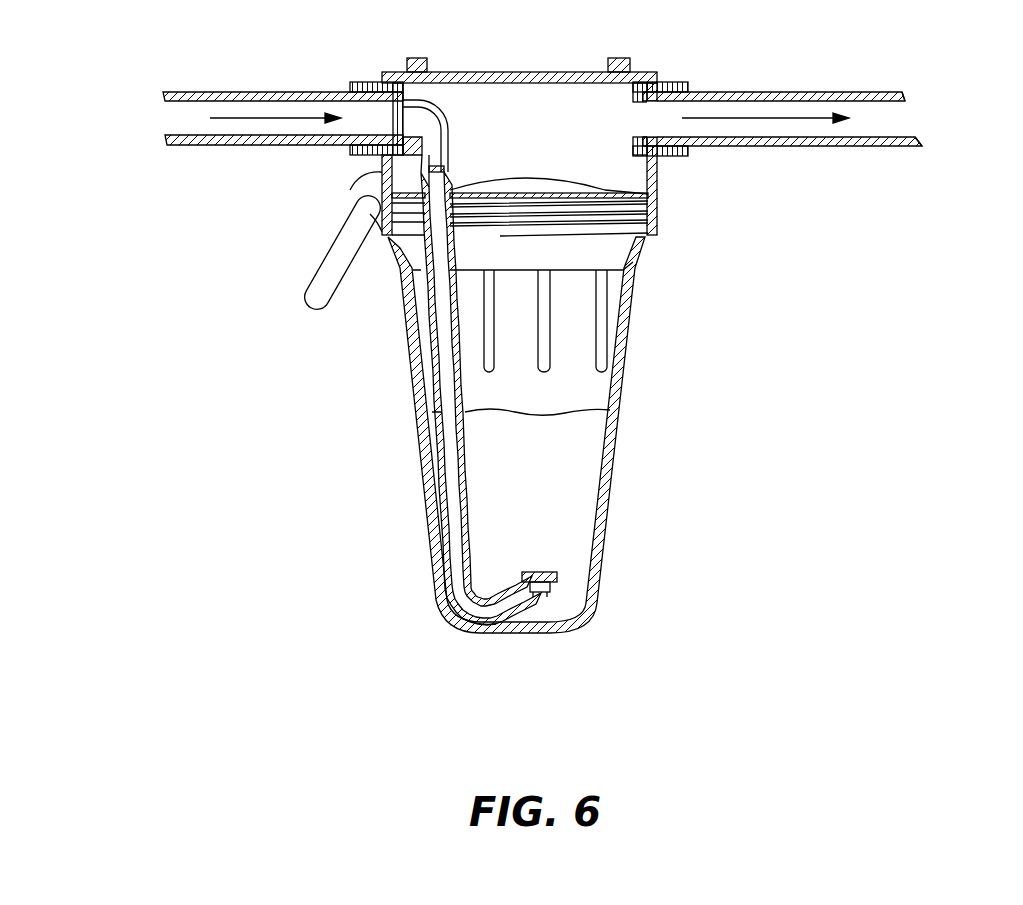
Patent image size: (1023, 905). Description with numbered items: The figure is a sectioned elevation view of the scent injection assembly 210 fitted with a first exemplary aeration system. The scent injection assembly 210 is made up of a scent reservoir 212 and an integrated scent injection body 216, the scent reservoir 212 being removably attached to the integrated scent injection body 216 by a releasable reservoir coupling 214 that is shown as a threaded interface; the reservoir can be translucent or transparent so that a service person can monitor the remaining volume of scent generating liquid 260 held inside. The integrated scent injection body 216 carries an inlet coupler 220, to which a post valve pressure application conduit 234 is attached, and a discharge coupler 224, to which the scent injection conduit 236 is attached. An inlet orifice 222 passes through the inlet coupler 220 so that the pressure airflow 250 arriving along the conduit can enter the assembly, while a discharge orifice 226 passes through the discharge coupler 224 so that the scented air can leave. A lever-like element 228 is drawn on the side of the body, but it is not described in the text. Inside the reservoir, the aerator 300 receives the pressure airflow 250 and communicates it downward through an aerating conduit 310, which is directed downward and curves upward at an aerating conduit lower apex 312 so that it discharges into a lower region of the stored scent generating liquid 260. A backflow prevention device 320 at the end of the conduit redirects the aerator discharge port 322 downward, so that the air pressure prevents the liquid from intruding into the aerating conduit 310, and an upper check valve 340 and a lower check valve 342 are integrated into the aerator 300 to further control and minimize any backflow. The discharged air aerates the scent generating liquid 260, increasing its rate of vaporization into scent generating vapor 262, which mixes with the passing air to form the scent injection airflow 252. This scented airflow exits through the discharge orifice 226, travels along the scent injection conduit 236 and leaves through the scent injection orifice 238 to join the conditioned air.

The scent injection assembly 210 is at (500, 369).
The scent reservoir 212 is at (432, 518).
The releasable reservoir coupling 214 is at (658, 231).
The integrated scent injection body 216 is at (660, 180).
The inlet coupler 220 is at (370, 83).
The inlet orifice 222 is at (412, 120).
The discharge coupler 224 is at (675, 82).
The discharge orifice 226 is at (626, 120).
The lever 228 is at (330, 255).
The post valve pressure application conduit 234 is at (277, 92).
The scent injection conduit 236 is at (775, 92).
The scent injection orifice 238 is at (924, 117).
The pressure airflow 250 is at (262, 137).
The scent injection airflow 252 is at (787, 122).
The scent generating liquid 260 is at (578, 535).
The scent generating vapor 262 is at (602, 385).
The aerator 300 is at (510, 406).
The aerating conduit 310 is at (438, 420).
The aerating conduit lower apex 312 is at (487, 624).
The backflow prevention device 320 is at (543, 572).
The aerator discharge port 322 is at (548, 590).
The upper check valve 340 is at (437, 168).
The lower check valve 342 is at (558, 578).